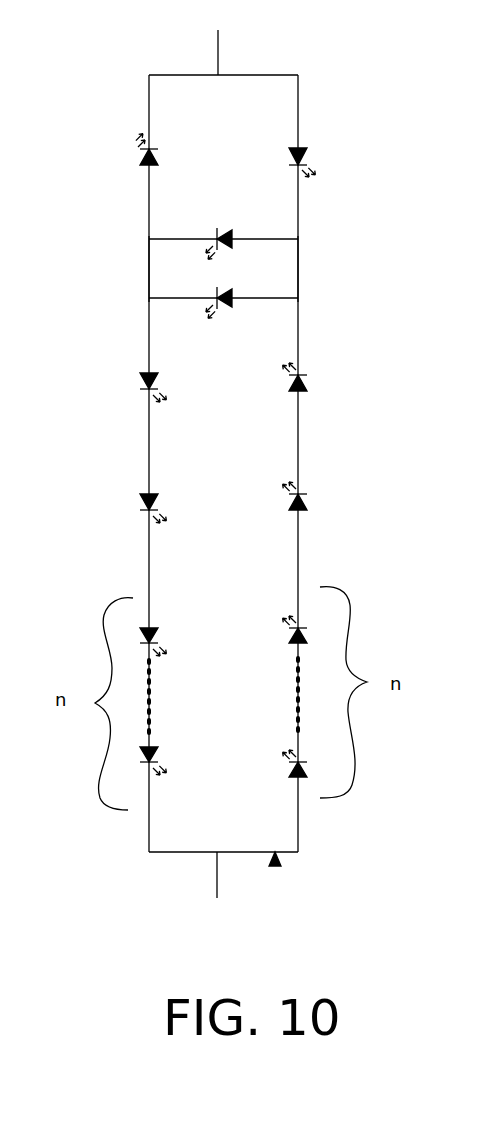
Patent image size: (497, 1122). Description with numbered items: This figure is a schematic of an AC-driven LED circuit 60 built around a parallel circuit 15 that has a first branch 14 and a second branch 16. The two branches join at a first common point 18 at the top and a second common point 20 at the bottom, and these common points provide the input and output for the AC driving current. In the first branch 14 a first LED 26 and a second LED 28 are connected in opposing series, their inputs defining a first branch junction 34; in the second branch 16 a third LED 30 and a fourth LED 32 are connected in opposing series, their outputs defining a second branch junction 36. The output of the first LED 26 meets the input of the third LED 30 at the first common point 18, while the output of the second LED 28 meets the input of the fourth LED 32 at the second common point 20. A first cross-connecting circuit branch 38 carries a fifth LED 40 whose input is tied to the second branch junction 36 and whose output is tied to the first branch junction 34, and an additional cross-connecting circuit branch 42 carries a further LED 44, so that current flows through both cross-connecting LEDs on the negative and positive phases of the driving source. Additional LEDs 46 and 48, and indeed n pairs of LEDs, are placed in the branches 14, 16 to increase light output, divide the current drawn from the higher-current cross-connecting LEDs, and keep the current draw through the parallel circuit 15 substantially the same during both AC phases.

The AC-driven circuit 60 is at (333, 66).
The first common point 18 is at (219, 76).
The second common point 20 is at (217, 851).
The parallel circuit 15 is at (275, 866).
The first branch 14 is at (141, 448).
The second branch 16 is at (309, 432).
The first LED 26 is at (142, 162).
The third LED 30 is at (304, 152).
The second LED 28 is at (142, 382).
The fourth LED 32 is at (305, 378).
The first branch junction 34 is at (145, 268).
The second branch junction 36 is at (299, 272).
The first cross-connecting circuit branch 38 is at (177, 232).
The additional cross-connecting circuit branch 42 is at (177, 304).
The fifth LED 40 is at (229, 230).
The LED 44 is at (234, 306).
The additional LED 46 is at (142, 496).
The additional LED 48 is at (306, 498).